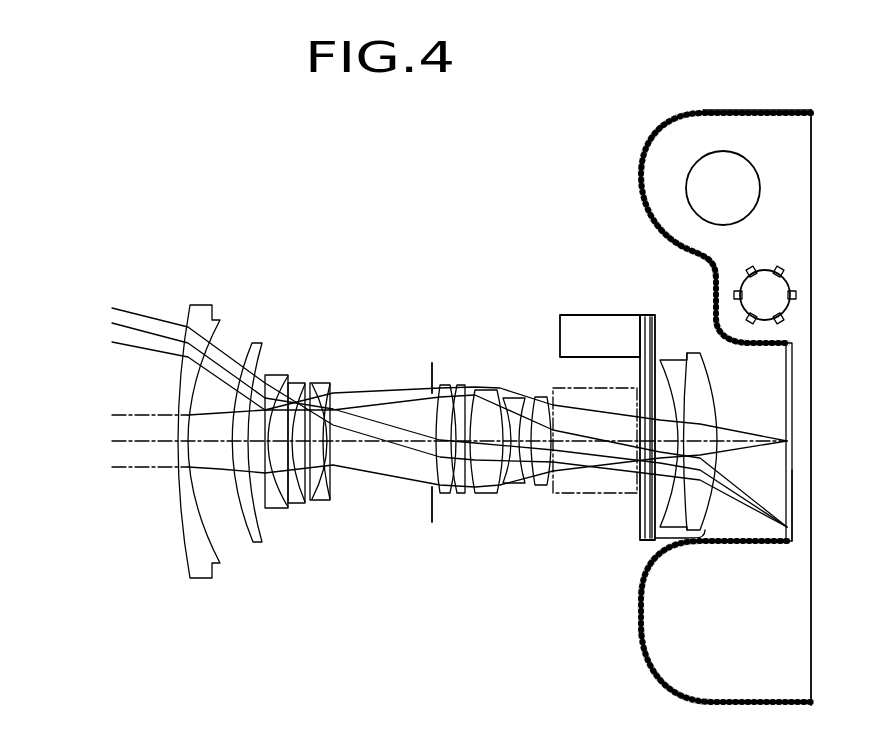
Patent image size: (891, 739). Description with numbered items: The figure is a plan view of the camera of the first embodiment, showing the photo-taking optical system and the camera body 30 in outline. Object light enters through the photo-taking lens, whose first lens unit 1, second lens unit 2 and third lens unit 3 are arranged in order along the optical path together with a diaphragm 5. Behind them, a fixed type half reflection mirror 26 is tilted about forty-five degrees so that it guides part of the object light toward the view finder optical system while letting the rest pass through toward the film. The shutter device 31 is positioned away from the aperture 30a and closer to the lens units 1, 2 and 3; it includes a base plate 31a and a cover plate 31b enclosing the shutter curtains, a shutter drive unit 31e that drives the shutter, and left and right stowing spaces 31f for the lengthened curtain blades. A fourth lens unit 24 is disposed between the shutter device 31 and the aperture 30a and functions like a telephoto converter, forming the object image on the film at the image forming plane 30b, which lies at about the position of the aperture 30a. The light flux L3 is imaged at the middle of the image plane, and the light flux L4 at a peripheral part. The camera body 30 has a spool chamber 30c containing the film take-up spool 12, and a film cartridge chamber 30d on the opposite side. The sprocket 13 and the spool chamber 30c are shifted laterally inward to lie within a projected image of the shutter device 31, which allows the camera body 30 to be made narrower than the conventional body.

The first lens unit 1 is at (263, 594).
The second lens unit 2 is at (333, 594).
The third lens unit 3 is at (548, 594).
The diaphragm 5 is at (429, 512).
The film take-up spool 12 is at (728, 152).
The sprocket 13 is at (783, 300).
The fourth lens unit 24 is at (692, 538).
The fixed type half reflection mirror 26 is at (553, 497).
The camera body 30 is at (805, 406).
The aperture 30a is at (793, 357).
The image forming plane 30b is at (795, 490).
The spool chamber 30c is at (793, 125).
The film cartridge chamber 30d is at (735, 688).
The shutter device 31 is at (662, 541).
The base plate 31a is at (647, 510).
The cover plate 31b is at (657, 343).
The shutter drive unit 31e is at (577, 322).
The left and right stowing spaces 31f is at (655, 325).
The light flux L3 is at (98, 412).
The light flux L4 is at (98, 295).